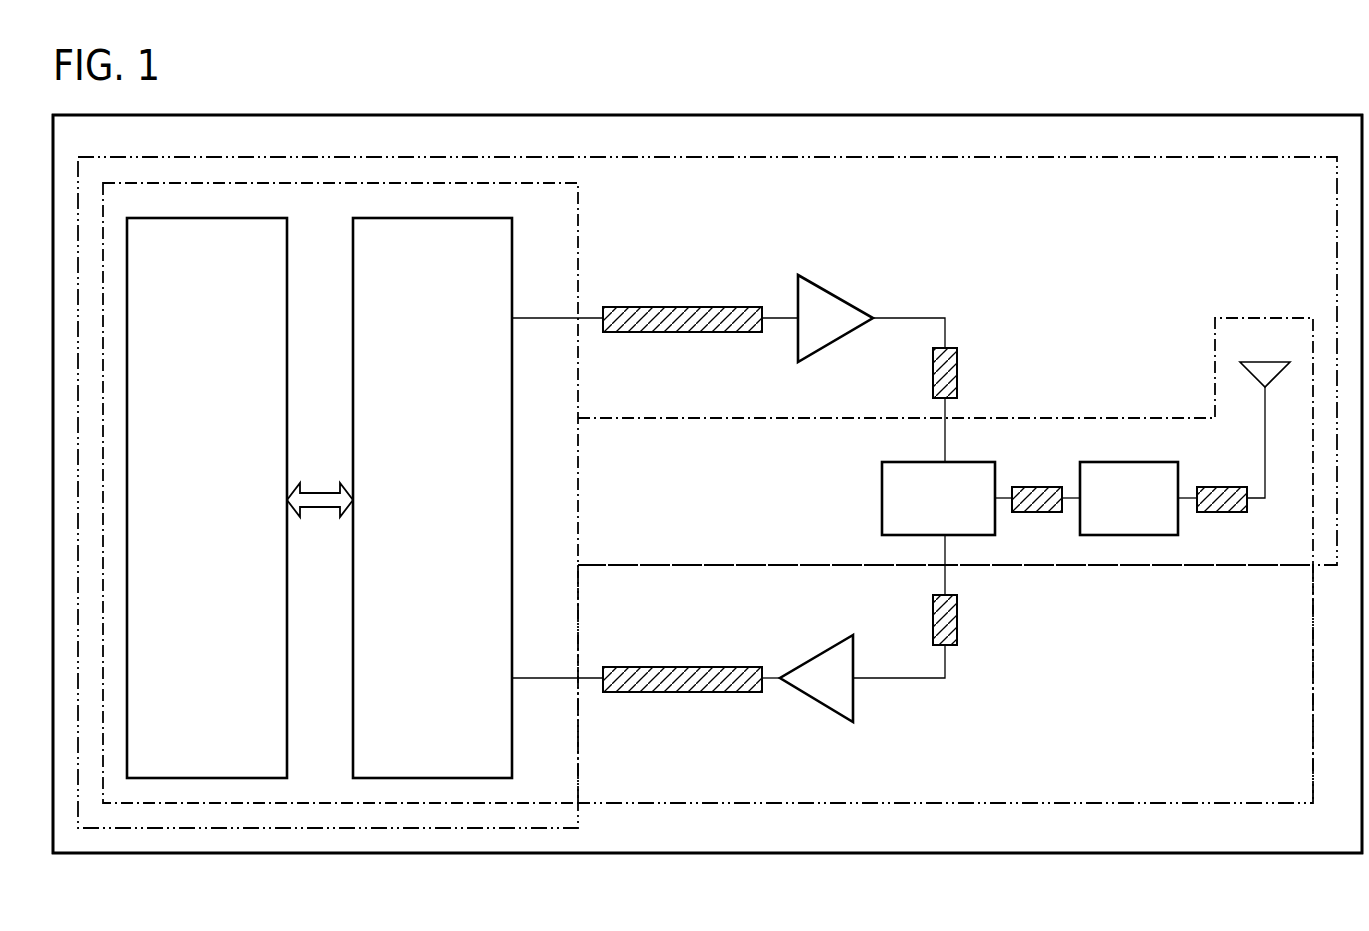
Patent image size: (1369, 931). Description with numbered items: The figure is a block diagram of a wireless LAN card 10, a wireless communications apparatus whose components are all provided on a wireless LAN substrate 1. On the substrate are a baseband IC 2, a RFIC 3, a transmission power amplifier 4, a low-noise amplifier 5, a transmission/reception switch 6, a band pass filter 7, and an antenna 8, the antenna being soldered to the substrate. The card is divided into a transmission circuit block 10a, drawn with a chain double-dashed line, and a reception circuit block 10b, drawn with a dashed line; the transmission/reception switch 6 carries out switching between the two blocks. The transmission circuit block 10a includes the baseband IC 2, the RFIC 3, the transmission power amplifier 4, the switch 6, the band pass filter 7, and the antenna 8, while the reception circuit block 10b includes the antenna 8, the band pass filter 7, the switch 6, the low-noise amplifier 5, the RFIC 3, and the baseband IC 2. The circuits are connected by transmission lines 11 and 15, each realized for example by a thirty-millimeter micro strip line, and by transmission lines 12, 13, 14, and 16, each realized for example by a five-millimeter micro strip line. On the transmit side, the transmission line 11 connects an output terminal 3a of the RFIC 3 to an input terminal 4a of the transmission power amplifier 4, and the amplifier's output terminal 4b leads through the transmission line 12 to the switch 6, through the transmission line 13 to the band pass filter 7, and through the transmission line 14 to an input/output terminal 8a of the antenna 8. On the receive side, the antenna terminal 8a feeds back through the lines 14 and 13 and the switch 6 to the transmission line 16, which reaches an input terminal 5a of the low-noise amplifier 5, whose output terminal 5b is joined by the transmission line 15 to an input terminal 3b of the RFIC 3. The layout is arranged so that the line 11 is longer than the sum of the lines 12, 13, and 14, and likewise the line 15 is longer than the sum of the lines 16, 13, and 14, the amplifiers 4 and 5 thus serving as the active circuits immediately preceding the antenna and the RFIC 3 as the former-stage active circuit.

The wireless LAN substrate 1 is at (800, 115).
The baseband IC 2 is at (210, 218).
The RFIC 3 is at (435, 218).
The output terminal of the RFIC 3a is at (513, 318).
The input terminal of the RFIC 3b is at (513, 678).
The transmission power amplifier 4 is at (818, 293).
The input terminal of the transmission power amplifier 4a is at (797, 316).
The output terminal of the transmission power amplifier 4b is at (875, 316).
The low-noise amplifier 5 is at (835, 650).
The input terminal of the low-noise amplifier 5a is at (855, 676).
The output terminal of the low-noise amplifier 5b is at (779, 676).
The transmission/reception switch 6 is at (882, 496).
The band pass filter 7 is at (1125, 462).
The antenna 8 is at (1262, 362).
The input/output terminal of the antenna 8a is at (1266, 500).
The wireless LAN card 10 is at (1284, 102).
The transmission circuit block 10a is at (790, 157).
The reception circuit block 10b is at (800, 803).
The transmission line 11 is at (683, 307).
The transmission line 12 is at (957, 366).
The transmission line 13 is at (1037, 487).
The transmission line 14 is at (1222, 487).
The transmission line 15 is at (683, 667).
The transmission line 16 is at (957, 613).